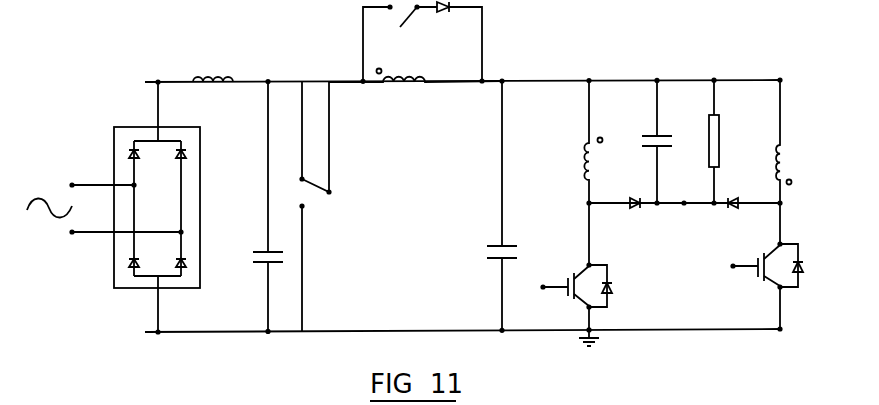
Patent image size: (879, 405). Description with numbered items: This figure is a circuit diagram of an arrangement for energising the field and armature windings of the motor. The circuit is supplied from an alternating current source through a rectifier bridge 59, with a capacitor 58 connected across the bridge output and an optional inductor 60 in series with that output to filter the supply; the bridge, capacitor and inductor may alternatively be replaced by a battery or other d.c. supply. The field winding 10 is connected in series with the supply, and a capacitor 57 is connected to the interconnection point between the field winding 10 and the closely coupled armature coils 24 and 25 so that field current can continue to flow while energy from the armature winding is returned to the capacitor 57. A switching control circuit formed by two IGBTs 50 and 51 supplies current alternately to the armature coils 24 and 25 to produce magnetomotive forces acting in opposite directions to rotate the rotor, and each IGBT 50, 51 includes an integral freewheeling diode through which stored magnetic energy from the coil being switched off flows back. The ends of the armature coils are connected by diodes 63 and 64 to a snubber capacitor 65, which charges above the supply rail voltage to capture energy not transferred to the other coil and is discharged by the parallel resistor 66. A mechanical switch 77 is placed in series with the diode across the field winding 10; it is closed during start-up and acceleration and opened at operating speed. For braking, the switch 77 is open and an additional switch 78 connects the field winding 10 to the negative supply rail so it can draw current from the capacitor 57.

The rectifier bridge 59 is at (114, 160).
The inductor 60 is at (203, 80).
The capacitor 58 is at (258, 251).
The switch 78 is at (320, 190).
The mechanical switch 77 is at (404, 24).
The field winding 10 is at (415, 84).
The capacitor 57 is at (496, 262).
The IGBT 50 is at (566, 278).
The armature coil 24 is at (586, 168).
The snubber capacitor 65 is at (650, 136).
The parallel resistor 66 is at (721, 140).
The armature coil 25 is at (783, 150).
The diode 63 is at (638, 208).
The diode 64 is at (733, 208).
The IGBT 51 is at (757, 274).